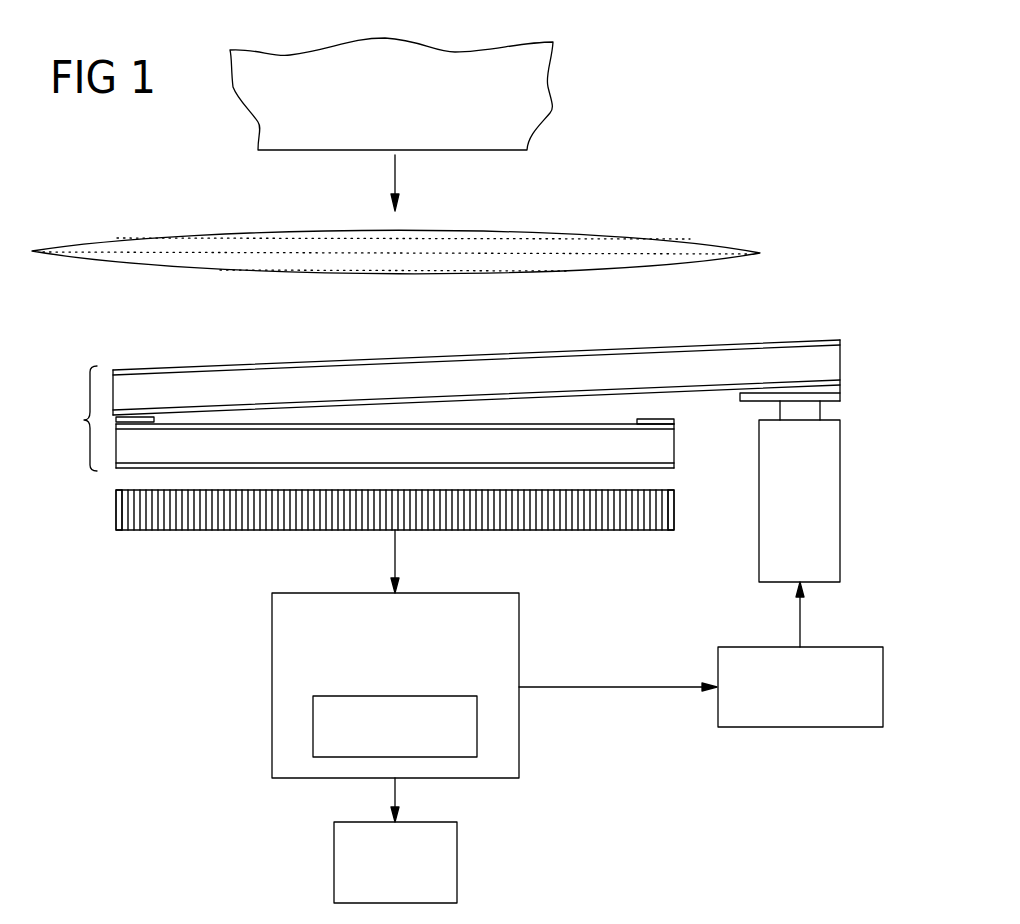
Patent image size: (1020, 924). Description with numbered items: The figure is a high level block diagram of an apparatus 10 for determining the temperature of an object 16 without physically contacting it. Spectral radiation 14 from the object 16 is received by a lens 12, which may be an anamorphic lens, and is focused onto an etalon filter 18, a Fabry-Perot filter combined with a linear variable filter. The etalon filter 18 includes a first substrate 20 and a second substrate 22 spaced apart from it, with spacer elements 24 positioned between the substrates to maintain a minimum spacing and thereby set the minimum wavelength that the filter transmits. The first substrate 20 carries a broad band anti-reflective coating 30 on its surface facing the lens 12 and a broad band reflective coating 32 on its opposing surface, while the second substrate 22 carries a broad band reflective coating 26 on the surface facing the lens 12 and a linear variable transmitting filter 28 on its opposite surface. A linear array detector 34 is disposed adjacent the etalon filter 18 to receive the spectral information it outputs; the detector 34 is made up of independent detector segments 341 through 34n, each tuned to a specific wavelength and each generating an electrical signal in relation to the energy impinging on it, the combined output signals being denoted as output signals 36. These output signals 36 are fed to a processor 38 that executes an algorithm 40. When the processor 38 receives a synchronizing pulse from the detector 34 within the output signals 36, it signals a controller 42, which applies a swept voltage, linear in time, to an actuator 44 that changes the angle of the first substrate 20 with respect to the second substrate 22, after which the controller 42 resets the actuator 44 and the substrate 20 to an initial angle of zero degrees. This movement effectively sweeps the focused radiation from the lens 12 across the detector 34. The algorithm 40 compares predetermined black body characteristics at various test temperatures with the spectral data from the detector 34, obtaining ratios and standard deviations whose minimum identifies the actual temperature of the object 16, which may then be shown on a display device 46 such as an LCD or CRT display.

The apparatus 10 is at (713, 148).
The lens 12 is at (106, 226).
The spectral radiation 14 is at (397, 178).
The object 16 is at (410, 110).
The etalon filter 18 is at (76, 418).
The first substrate 20 is at (476, 349).
The second substrate 22 is at (100, 475).
The spacer elements 24 is at (137, 417).
The broad band reflective coating 26 is at (428, 444).
The linear variable transmitting filter 28 is at (675, 467).
The broad band anti-reflective coating 30 is at (748, 346).
The broad band reflective coating 32 is at (730, 388).
The linear array detector 34 is at (104, 524).
The first detector segment 341 is at (119, 528).
The nth detector segment 34n is at (670, 528).
The output signals 36 is at (397, 551).
The processor 38 is at (381, 661).
The algorithm 40 is at (381, 752).
The controller 42 is at (786, 712).
The actuator 44 is at (758, 537).
The display device 46 is at (381, 887).